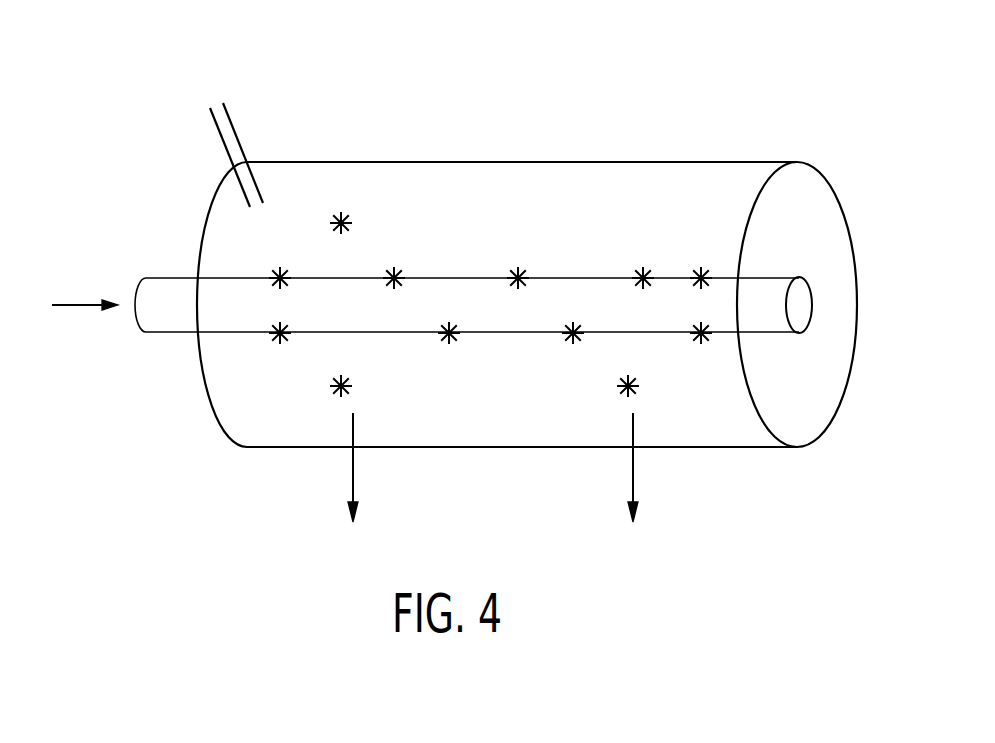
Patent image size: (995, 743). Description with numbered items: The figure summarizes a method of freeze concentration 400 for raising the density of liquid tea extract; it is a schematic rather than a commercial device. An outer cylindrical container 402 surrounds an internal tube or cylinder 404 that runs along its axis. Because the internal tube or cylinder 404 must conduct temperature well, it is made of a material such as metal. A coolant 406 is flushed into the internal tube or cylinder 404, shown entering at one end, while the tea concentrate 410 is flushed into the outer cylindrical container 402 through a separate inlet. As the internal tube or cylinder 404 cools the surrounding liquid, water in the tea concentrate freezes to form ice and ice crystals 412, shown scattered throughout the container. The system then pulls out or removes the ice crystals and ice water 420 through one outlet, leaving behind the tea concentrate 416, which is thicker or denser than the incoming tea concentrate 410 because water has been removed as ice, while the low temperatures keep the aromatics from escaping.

The method of freeze concentration 400 is at (108, 97).
The cylindrical container 402 is at (445, 161).
The internal tube or cylinder 404 is at (177, 320).
The coolant 406 is at (78, 307).
The tea concentrate 410 is at (222, 137).
The ice and ice crystals 412 is at (701, 266).
The tea concentrate 416 is at (352, 470).
The ice crystals and ice water 420 is at (632, 470).